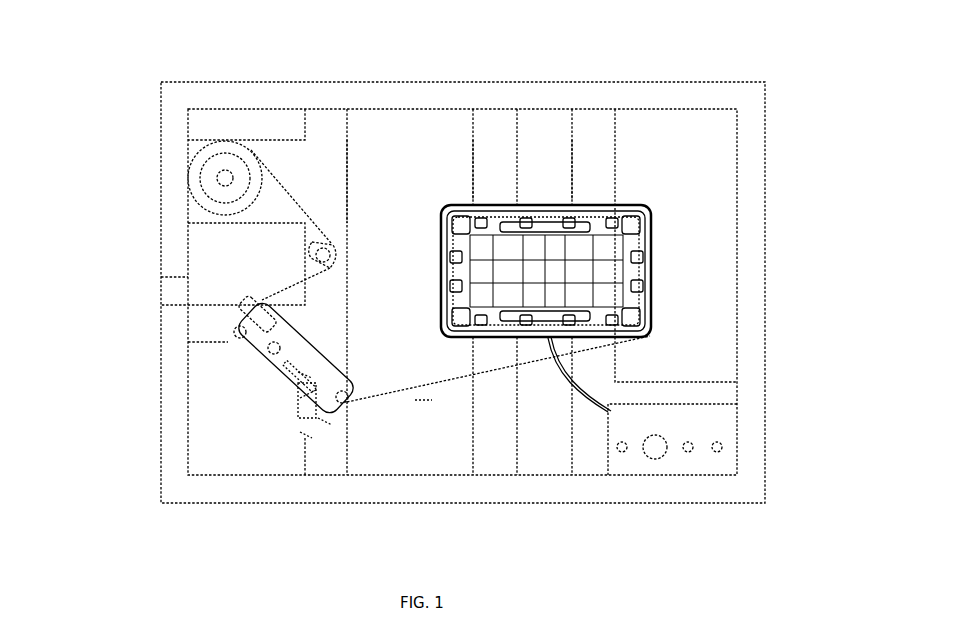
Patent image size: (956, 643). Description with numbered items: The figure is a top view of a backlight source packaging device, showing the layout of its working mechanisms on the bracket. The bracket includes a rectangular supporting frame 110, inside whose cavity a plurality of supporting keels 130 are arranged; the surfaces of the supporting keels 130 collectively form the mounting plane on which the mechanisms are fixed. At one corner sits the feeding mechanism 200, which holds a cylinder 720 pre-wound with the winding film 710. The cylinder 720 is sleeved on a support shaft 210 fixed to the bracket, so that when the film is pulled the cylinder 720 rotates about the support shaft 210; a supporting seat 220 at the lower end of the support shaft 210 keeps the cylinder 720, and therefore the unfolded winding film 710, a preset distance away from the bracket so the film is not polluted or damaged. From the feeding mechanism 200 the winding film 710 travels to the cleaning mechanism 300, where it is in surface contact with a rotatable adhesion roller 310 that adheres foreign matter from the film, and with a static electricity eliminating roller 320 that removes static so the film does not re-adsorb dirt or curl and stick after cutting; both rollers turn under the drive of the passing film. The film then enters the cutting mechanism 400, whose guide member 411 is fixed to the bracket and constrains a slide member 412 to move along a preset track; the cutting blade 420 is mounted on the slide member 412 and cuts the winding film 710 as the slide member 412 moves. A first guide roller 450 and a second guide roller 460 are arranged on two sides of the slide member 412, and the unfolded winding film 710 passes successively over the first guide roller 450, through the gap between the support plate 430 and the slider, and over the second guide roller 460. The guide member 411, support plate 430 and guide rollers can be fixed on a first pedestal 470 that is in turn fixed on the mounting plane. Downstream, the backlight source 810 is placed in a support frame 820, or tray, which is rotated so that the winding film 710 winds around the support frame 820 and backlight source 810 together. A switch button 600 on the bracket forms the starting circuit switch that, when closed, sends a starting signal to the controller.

The rectangular supporting frame 110 is at (412, 102).
The supporting keel 130 is at (333, 143).
The feeding mechanism 200 is at (97, 215).
The support shaft 210 is at (222, 178).
The supporting seat 220 is at (222, 206).
The cleaning mechanism 300 is at (95, 345).
The adhesion roller 310 is at (314, 256).
The static electricity eliminating roller 320 is at (236, 331).
The cutting mechanism 400 is at (97, 502).
The guide member 411 is at (297, 390).
The slide member 412 is at (320, 408).
The cutting blade 420 is at (342, 402).
The support plate 430 is at (302, 368).
The first guide roller 450 is at (270, 349).
The second guide roller 460 is at (305, 436).
The first pedestal 470 is at (328, 420).
The switch button 600 is at (655, 447).
The winding film 710 is at (423, 388).
The cylinder 720 is at (220, 152).
The backlight source 810 is at (608, 252).
The support frame 820 is at (630, 300).